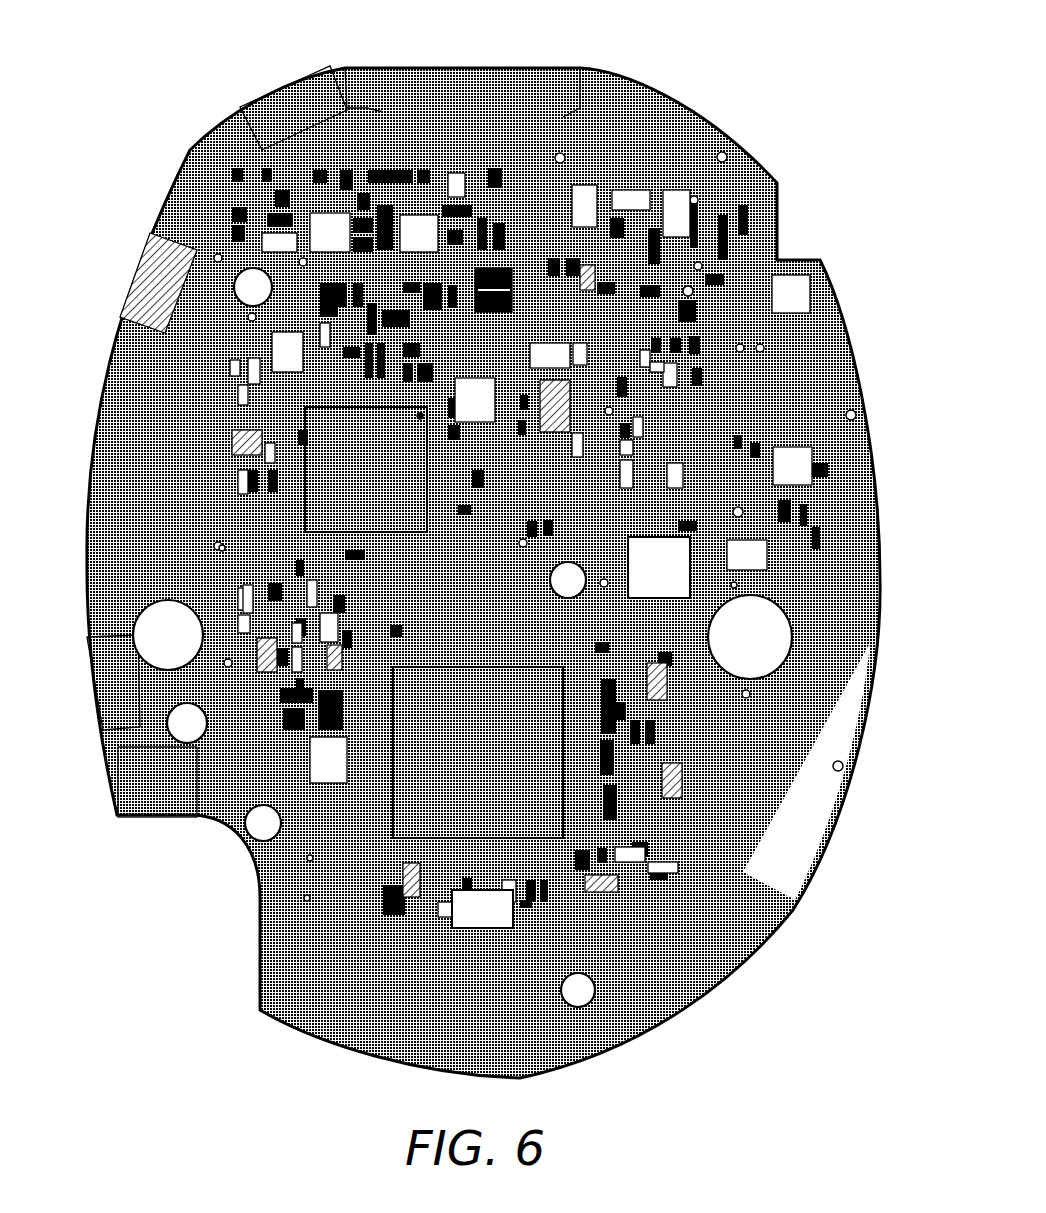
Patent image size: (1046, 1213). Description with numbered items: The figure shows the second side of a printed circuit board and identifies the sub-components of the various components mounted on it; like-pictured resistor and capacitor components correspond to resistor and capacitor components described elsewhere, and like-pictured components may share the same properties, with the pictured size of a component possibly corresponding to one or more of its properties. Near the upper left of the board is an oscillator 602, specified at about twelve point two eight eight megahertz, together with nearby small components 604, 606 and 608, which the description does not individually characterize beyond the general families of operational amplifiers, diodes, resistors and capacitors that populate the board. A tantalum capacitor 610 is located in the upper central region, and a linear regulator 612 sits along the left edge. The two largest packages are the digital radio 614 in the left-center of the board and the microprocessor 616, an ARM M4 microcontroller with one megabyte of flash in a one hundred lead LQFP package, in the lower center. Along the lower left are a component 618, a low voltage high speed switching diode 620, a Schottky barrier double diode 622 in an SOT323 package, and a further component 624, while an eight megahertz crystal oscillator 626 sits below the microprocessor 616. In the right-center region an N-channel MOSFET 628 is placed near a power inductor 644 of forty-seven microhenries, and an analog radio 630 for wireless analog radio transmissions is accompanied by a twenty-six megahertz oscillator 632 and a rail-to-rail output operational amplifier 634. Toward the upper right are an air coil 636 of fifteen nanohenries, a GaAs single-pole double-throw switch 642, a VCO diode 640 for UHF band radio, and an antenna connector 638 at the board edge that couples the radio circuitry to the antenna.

The oscillator 602 is at (293, 347).
The component 604 is at (328, 232).
The component 606 is at (280, 242).
The component 608 is at (418, 232).
The Tant Cap 610 is at (492, 297).
The linear regulator 612 is at (245, 440).
The digital radio 614 is at (334, 454).
The microprocessor 616 is at (451, 804).
The component 618 is at (243, 585).
The diode 620 is at (257, 667).
The diode 622 is at (280, 707).
The component 624 is at (327, 760).
The oscillator 626 is at (462, 918).
The MOSFET 628 is at (570, 403).
The analog radio 630 is at (638, 579).
The oscillator 632 is at (747, 550).
The operational amplifier 634 is at (792, 470).
The air coil 636 is at (585, 190).
The antenna connector 638 is at (790, 298).
The diode 640 is at (687, 297).
The switch 642 is at (615, 223).
The power inductor 644 is at (476, 386).